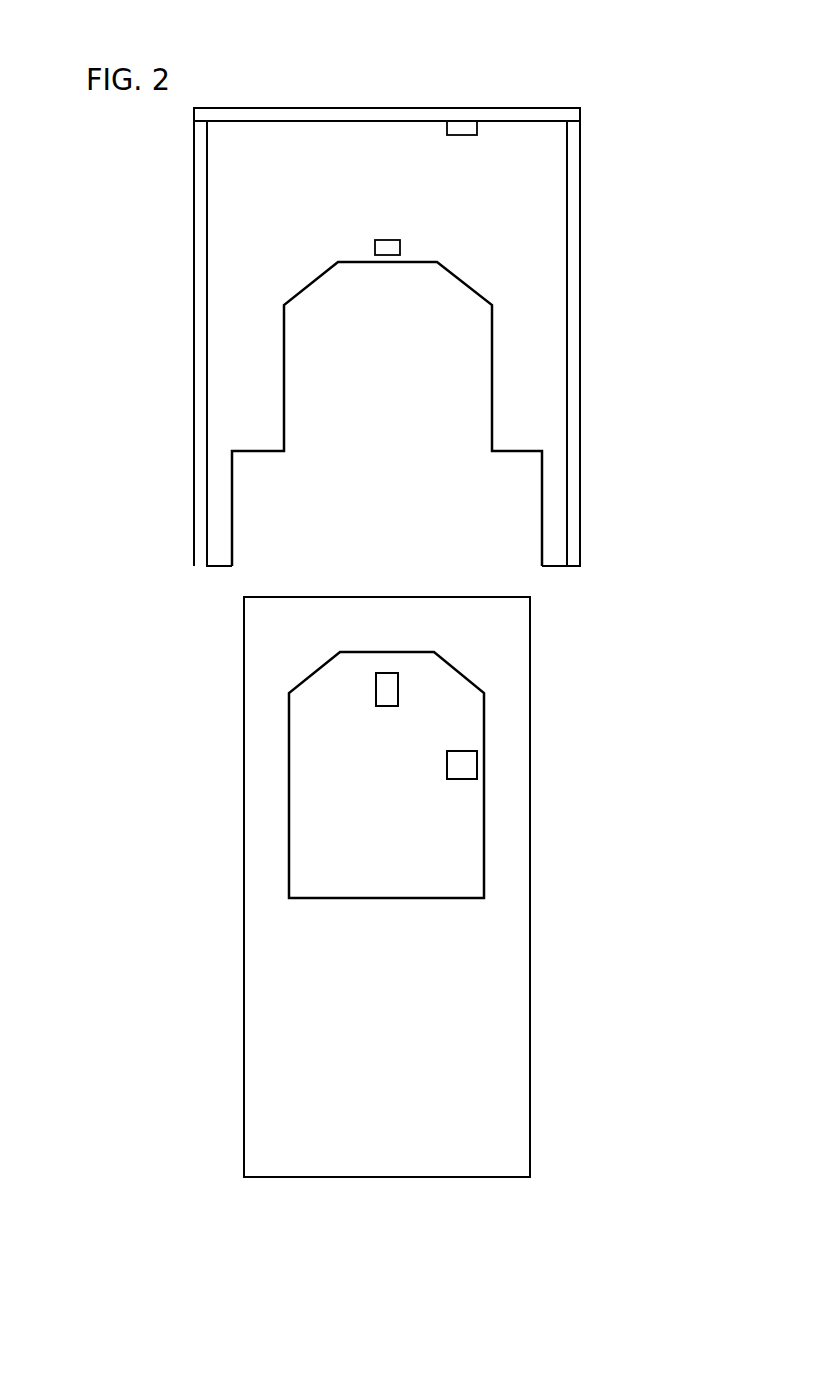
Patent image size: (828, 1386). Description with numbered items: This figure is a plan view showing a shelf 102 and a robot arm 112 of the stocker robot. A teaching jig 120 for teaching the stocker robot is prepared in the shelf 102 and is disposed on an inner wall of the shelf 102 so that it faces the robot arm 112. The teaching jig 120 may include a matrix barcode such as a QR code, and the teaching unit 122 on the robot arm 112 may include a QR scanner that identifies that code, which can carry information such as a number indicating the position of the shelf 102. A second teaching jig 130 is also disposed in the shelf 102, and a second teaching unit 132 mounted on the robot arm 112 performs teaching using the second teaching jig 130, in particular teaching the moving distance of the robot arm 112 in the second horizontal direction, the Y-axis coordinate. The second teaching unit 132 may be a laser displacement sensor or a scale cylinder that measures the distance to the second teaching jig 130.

The shelf 102 is at (218, 217).
The teaching jig 120 is at (467, 127).
The second teaching jig 130 is at (390, 247).
The robot arm 112 is at (261, 779).
The second teaching unit 132 is at (392, 689).
The teaching unit 122 is at (470, 767).